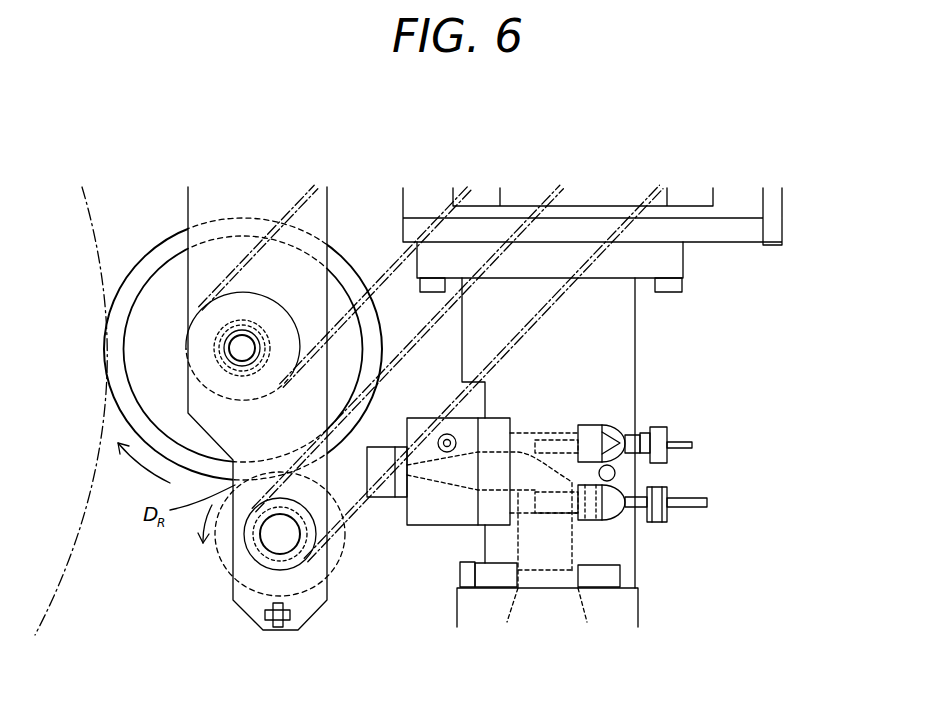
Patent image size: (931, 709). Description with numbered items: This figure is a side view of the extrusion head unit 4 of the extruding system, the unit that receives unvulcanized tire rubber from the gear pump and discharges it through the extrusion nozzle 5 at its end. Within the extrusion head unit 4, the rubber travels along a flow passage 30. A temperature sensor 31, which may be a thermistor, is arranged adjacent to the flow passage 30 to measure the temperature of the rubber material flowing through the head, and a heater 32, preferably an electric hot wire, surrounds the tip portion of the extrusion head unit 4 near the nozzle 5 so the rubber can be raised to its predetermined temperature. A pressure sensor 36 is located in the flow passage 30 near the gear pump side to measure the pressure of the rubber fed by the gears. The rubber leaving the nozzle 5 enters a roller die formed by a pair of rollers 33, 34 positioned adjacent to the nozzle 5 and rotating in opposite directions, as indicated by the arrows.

The extrusion head unit 4 is at (636, 414).
The extrusion nozzle 5 is at (393, 497).
The flow passage 30 is at (560, 552).
The temperature sensor 31 is at (655, 440).
The heater 32 is at (447, 432).
The roller 33 is at (165, 240).
The roller 34 is at (217, 557).
The pressure sensor 36 is at (667, 492).